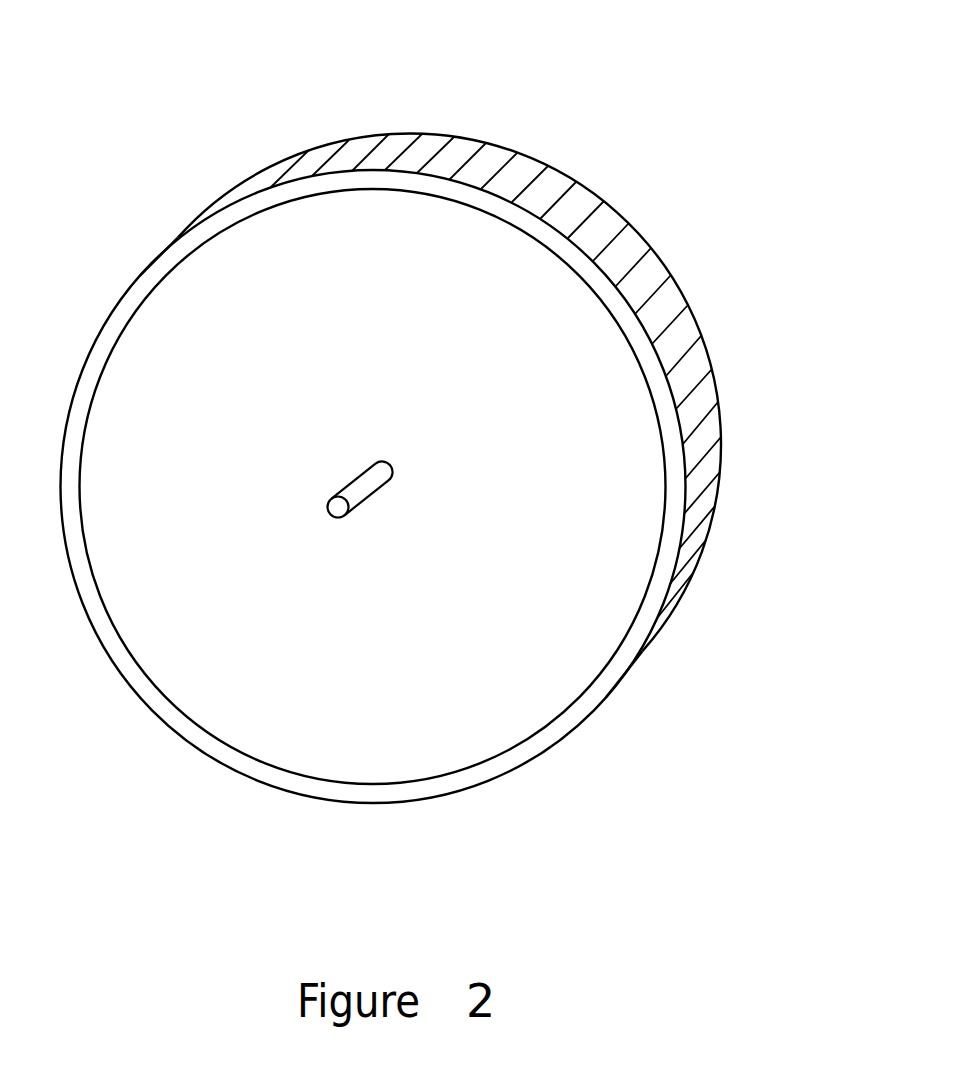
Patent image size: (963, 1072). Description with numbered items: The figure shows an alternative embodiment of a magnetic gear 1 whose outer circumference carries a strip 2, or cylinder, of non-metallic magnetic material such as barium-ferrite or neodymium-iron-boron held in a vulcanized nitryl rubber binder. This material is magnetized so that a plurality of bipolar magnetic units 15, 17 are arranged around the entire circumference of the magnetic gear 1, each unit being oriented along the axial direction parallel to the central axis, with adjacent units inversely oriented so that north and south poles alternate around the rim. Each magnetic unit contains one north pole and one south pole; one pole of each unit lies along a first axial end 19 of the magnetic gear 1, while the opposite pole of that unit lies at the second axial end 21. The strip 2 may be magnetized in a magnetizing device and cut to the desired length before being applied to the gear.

The magnetic gear 1 is at (137, 625).
The strip 2 is at (447, 758).
The magnetic unit 15 is at (476, 140).
The magnetic unit 17 is at (525, 157).
The first axial end 19 is at (630, 231).
The second axial end 21 is at (550, 708).